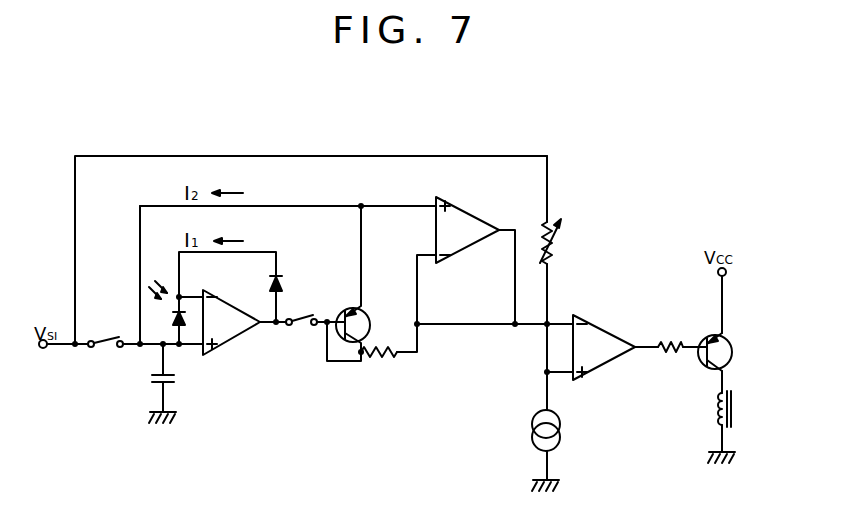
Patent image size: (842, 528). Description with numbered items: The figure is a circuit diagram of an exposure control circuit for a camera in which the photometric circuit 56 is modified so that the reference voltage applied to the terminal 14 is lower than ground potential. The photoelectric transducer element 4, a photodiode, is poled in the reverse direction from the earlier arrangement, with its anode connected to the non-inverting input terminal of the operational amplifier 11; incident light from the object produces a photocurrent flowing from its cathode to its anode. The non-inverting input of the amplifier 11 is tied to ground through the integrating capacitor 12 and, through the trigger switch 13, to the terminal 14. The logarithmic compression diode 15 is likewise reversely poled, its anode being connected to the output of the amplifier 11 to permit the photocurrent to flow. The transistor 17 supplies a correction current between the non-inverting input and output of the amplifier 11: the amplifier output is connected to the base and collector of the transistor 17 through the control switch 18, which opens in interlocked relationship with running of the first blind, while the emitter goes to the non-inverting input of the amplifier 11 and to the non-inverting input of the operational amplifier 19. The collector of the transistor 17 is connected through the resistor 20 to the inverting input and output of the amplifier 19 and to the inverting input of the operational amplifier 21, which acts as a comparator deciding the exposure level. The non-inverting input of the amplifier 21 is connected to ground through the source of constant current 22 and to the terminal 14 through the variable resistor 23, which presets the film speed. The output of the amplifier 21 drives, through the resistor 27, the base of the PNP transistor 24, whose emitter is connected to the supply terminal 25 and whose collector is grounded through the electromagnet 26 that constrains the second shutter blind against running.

The photoelectric transducer element 4 is at (171, 318).
The operational amplifier 11 is at (233, 313).
The integrating capacitor 12 is at (173, 378).
The trigger switch 13 is at (105, 361).
The terminal 14 is at (48, 363).
The logarithmic compression diode 15 is at (284, 279).
The transistor 17 is at (366, 329).
The control switch 18 is at (301, 339).
The operational amplifier 19 is at (474, 217).
The resistor 20 is at (389, 355).
The operational amplifier 21 is at (614, 340).
The source of constant current 22 is at (531, 438).
The variable resistor 23 is at (556, 248).
The PNP transistor 24 is at (730, 345).
The terminal 25 is at (726, 275).
The electromagnet 26 is at (733, 415).
The resistor 27 is at (662, 352).
The photometric circuit 56 is at (333, 205).